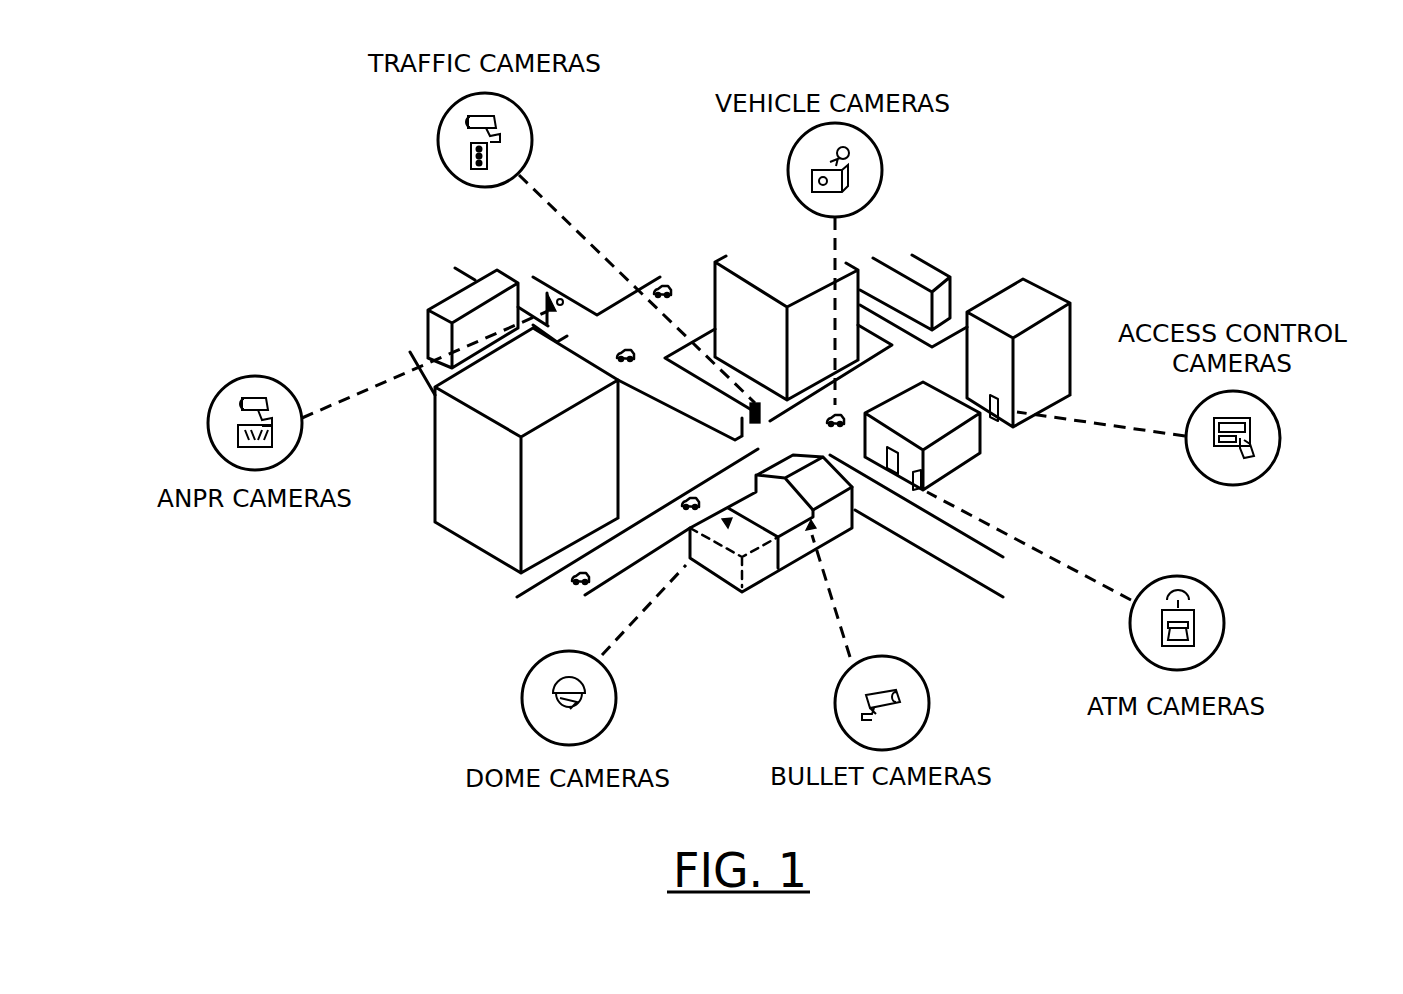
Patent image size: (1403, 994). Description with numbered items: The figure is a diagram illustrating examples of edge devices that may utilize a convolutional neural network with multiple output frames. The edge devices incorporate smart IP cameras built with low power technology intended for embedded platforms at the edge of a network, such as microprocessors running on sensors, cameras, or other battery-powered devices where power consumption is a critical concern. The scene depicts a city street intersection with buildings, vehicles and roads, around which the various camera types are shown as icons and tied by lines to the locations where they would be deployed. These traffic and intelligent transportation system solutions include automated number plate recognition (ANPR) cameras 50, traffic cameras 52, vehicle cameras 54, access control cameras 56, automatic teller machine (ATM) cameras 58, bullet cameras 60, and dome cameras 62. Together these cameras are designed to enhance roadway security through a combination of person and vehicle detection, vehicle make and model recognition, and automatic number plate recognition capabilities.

The automated number plate recognition (ANPR) cameras 50 is at (241, 379).
The traffic cameras 52 is at (450, 108).
The vehicle cameras 54 is at (792, 150).
The access control cameras 56 is at (1276, 410).
The automatic teller machine (ATM) cameras 58 is at (1205, 584).
The bullet cameras 60 is at (908, 661).
The dome cameras 62 is at (540, 661).